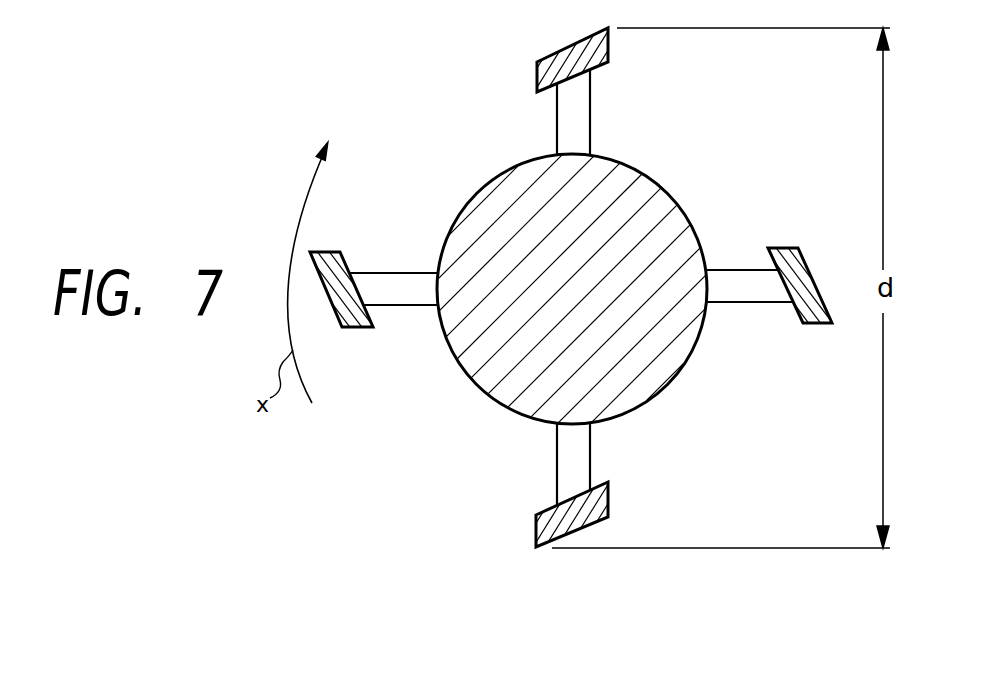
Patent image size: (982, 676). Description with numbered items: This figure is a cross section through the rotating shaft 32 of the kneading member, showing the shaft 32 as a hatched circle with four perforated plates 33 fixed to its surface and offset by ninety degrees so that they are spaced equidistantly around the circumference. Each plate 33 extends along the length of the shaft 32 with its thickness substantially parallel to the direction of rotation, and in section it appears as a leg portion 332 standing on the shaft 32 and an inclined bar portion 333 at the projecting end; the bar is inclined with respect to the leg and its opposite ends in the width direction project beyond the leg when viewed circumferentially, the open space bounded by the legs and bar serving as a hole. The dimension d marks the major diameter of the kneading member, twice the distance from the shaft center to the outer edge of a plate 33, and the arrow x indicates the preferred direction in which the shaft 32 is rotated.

The shaft 32 is at (685, 342).
The perforated plate 33 is at (418, 0).
The vane stem 332 is at (565, 118).
The vane blade 333 is at (549, 57).